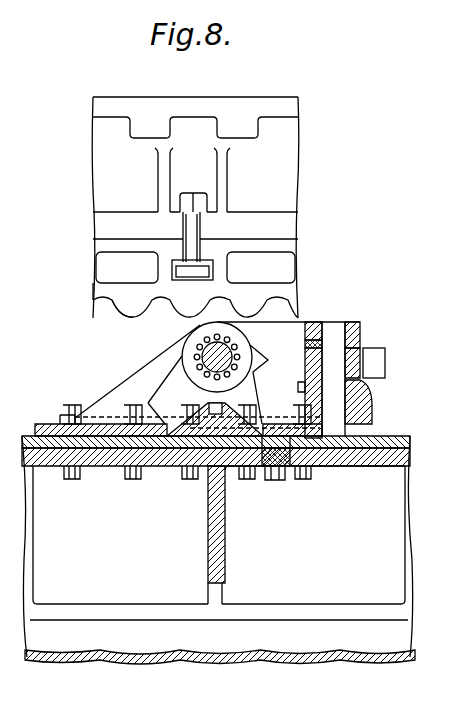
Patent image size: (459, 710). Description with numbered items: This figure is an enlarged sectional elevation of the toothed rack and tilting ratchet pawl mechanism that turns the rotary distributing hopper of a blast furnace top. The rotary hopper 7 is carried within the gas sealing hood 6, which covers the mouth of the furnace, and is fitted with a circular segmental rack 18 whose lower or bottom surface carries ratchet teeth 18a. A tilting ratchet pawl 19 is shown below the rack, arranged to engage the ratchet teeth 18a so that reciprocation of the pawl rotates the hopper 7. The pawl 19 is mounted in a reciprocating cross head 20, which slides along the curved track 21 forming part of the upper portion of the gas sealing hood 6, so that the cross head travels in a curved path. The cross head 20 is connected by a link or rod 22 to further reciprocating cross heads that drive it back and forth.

The gas sealing hood 6 is at (400, 633).
The rotary hopper 7 is at (195, 207).
The circular segmental rack 18 is at (104, 277).
The ratchet teeth 18a is at (130, 314).
The tilting ratchet pawls 19 is at (212, 326).
The reciprocating cross heads 20 is at (197, 379).
The curved track 21 is at (334, 442).
The links or rods 22 is at (385, 363).